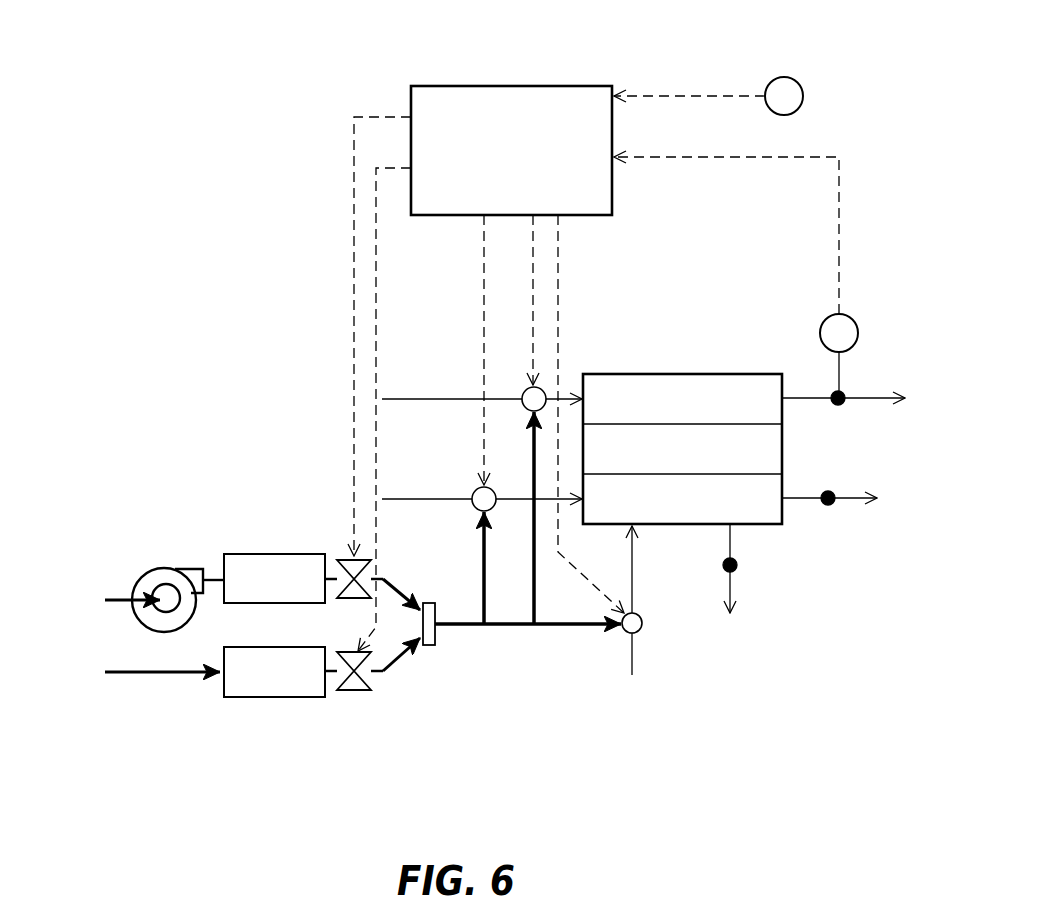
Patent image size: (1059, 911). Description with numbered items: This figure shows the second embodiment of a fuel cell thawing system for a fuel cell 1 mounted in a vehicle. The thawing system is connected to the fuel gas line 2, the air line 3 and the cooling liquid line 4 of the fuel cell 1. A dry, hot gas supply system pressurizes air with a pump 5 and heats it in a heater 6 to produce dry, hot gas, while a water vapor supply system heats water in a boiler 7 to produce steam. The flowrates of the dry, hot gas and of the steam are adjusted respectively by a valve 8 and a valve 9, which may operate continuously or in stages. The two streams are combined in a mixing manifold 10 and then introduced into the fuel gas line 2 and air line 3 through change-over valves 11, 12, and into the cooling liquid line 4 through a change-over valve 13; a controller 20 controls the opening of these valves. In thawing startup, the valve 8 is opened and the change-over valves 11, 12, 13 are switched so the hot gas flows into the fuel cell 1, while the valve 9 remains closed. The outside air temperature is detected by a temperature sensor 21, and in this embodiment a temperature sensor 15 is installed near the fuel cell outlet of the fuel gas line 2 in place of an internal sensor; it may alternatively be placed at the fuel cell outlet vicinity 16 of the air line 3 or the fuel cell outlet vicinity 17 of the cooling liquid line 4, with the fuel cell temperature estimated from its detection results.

The fuel cell 1 is at (626, 372).
The fuel gas line 2 is at (395, 402).
The air line 3 is at (456, 497).
The cooling liquid line 4 is at (634, 562).
The pump 5 is at (165, 568).
The heater 6 is at (238, 552).
The boiler 7 is at (273, 699).
The valve 8 is at (340, 558).
The valve 9 is at (355, 692).
The mixing manifold 10 is at (430, 648).
The change-over valve 11 is at (528, 388).
The change-over valve 12 is at (478, 487).
The change-over valve 13 is at (627, 636).
The temperature sensor 15 is at (856, 320).
The fuel cell outlet vicinity 16 is at (832, 506).
The fuel cell outlet vicinity 17 is at (736, 571).
The controller 20 is at (562, 85).
The temperature sensor 21 is at (803, 101).